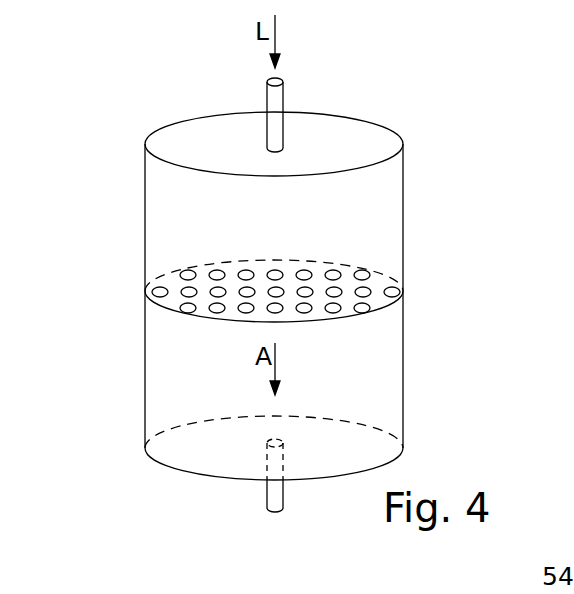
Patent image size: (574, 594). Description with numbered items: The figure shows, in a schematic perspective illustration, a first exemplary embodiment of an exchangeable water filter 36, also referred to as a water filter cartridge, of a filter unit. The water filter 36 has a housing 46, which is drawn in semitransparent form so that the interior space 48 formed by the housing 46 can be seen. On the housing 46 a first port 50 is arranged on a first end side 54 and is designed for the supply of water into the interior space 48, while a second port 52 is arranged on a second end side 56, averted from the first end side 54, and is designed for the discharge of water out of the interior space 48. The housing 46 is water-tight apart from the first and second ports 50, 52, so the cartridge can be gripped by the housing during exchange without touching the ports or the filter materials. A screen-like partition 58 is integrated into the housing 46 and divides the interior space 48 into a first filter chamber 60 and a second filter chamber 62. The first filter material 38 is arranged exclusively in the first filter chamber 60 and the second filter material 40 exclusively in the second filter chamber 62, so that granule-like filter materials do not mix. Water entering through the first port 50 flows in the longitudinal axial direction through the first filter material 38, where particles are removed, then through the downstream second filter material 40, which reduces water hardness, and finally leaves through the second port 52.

The water filter 36 is at (277, 295).
The first filter material 38 is at (385, 258).
The second filter material 40 is at (372, 398).
The housing 46 is at (419, 156).
The interior space 48 is at (387, 201).
The first port 50 is at (296, 78).
The second port 52 is at (302, 512).
The first end side 54 is at (350, 133).
The second end side 56 is at (225, 465).
The screen-like partition 58 is at (152, 305).
The first filter chamber 60 is at (155, 225).
The second filter chamber 62 is at (155, 385).